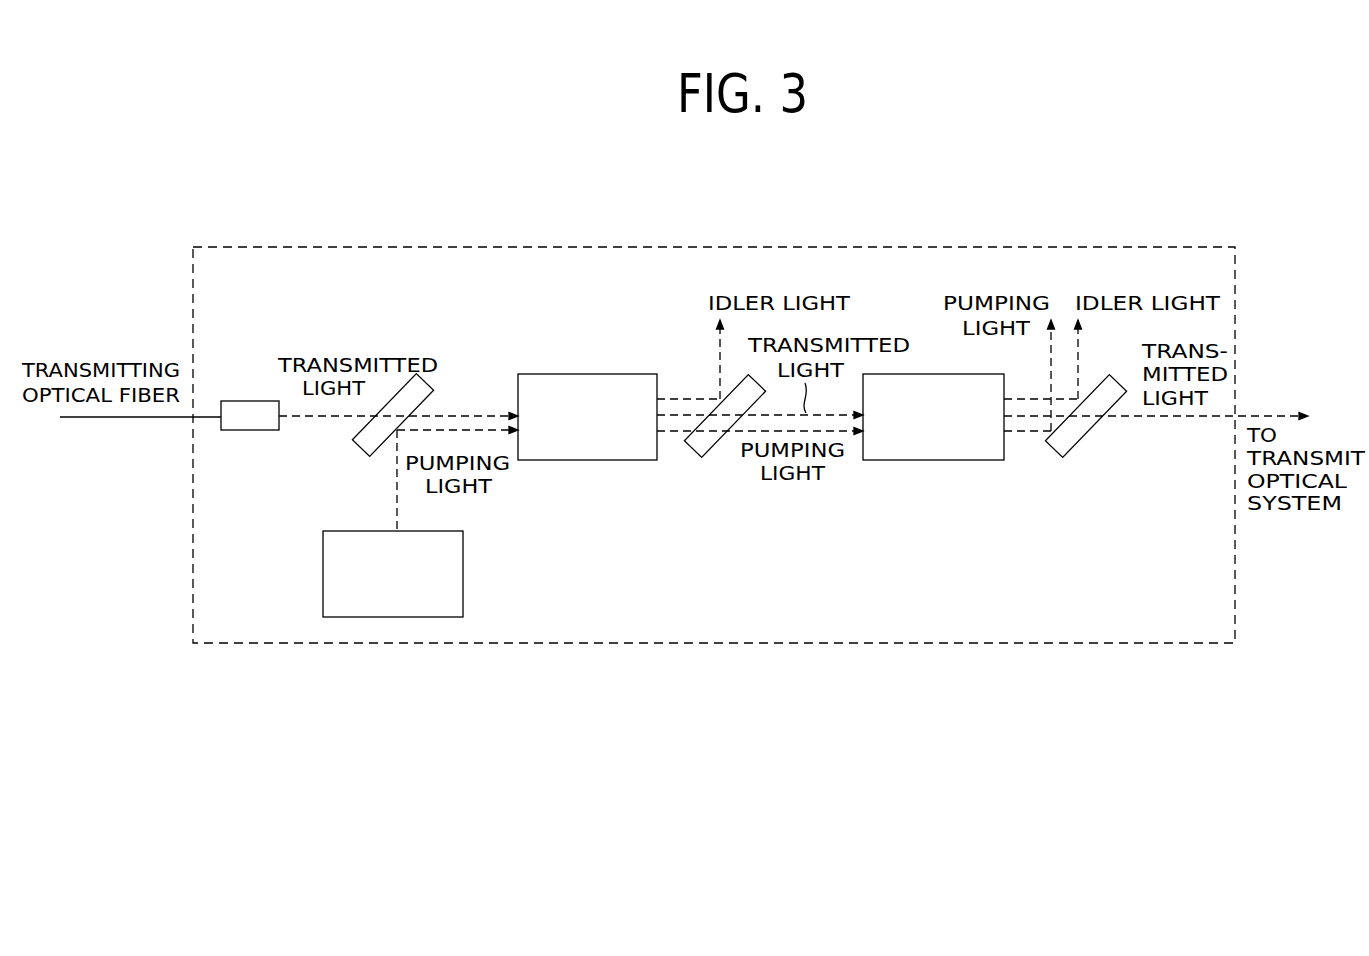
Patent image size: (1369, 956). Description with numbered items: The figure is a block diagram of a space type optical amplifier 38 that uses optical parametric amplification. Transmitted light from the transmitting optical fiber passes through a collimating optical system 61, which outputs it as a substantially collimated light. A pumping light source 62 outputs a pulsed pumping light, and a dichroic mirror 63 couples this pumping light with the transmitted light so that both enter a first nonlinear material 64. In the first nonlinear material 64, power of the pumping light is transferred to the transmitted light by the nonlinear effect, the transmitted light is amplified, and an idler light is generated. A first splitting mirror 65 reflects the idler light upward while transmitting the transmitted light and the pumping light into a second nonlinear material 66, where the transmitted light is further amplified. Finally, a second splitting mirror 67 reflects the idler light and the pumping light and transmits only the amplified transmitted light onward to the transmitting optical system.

The space type optical amplifier 38 is at (663, 247).
The collimating optical system 61 is at (251, 401).
The pumping light source 62 is at (463, 570).
The dichroic mirror 63 is at (420, 390).
The first nonlinear material 64 is at (588, 384).
The first splitting mirror 65 is at (697, 443).
The second nonlinear material 66 is at (933, 462).
The second splitting mirror 67 is at (1052, 446).